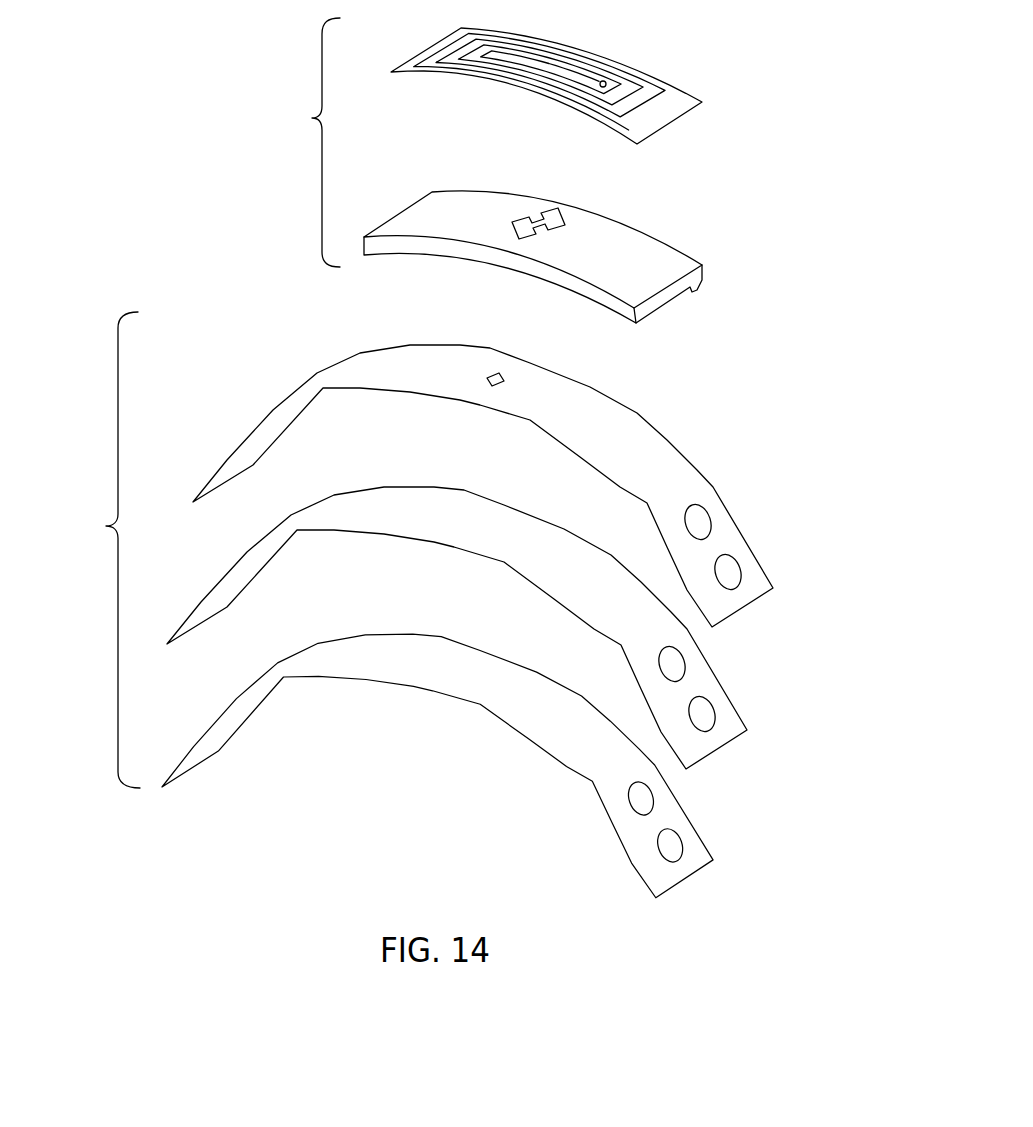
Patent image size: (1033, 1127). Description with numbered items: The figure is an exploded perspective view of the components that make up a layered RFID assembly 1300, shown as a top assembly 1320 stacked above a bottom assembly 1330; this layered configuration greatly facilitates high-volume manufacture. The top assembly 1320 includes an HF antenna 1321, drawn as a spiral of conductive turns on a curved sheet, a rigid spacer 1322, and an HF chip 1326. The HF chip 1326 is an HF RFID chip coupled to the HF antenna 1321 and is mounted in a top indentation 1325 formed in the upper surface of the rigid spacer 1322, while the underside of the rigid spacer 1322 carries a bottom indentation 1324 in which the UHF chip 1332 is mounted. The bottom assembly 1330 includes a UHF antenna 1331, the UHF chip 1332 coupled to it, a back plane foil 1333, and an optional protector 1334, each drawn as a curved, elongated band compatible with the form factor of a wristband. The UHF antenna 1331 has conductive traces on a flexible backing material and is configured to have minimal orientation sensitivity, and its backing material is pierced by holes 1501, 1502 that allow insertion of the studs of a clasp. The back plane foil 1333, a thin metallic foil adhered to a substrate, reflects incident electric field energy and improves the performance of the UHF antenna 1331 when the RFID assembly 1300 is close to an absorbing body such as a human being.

The RFID assembly 1300 is at (733, 201).
The top assembly 1320 is at (312, 118).
The HF antenna 1321 is at (503, 82).
The rigid spacer 1322 is at (415, 205).
The bottom indentation 1324 is at (505, 278).
The top indentation 1325 is at (593, 238).
The HF chip 1326 is at (523, 215).
The bottom assembly 1330 is at (106, 526).
The UHF antenna 1331 is at (303, 378).
The UHF chip 1332 is at (498, 378).
The back plane foil 1333 is at (333, 493).
The protector 1334 is at (338, 632).
The hole 1501 is at (697, 520).
The hole 1502 is at (728, 573).